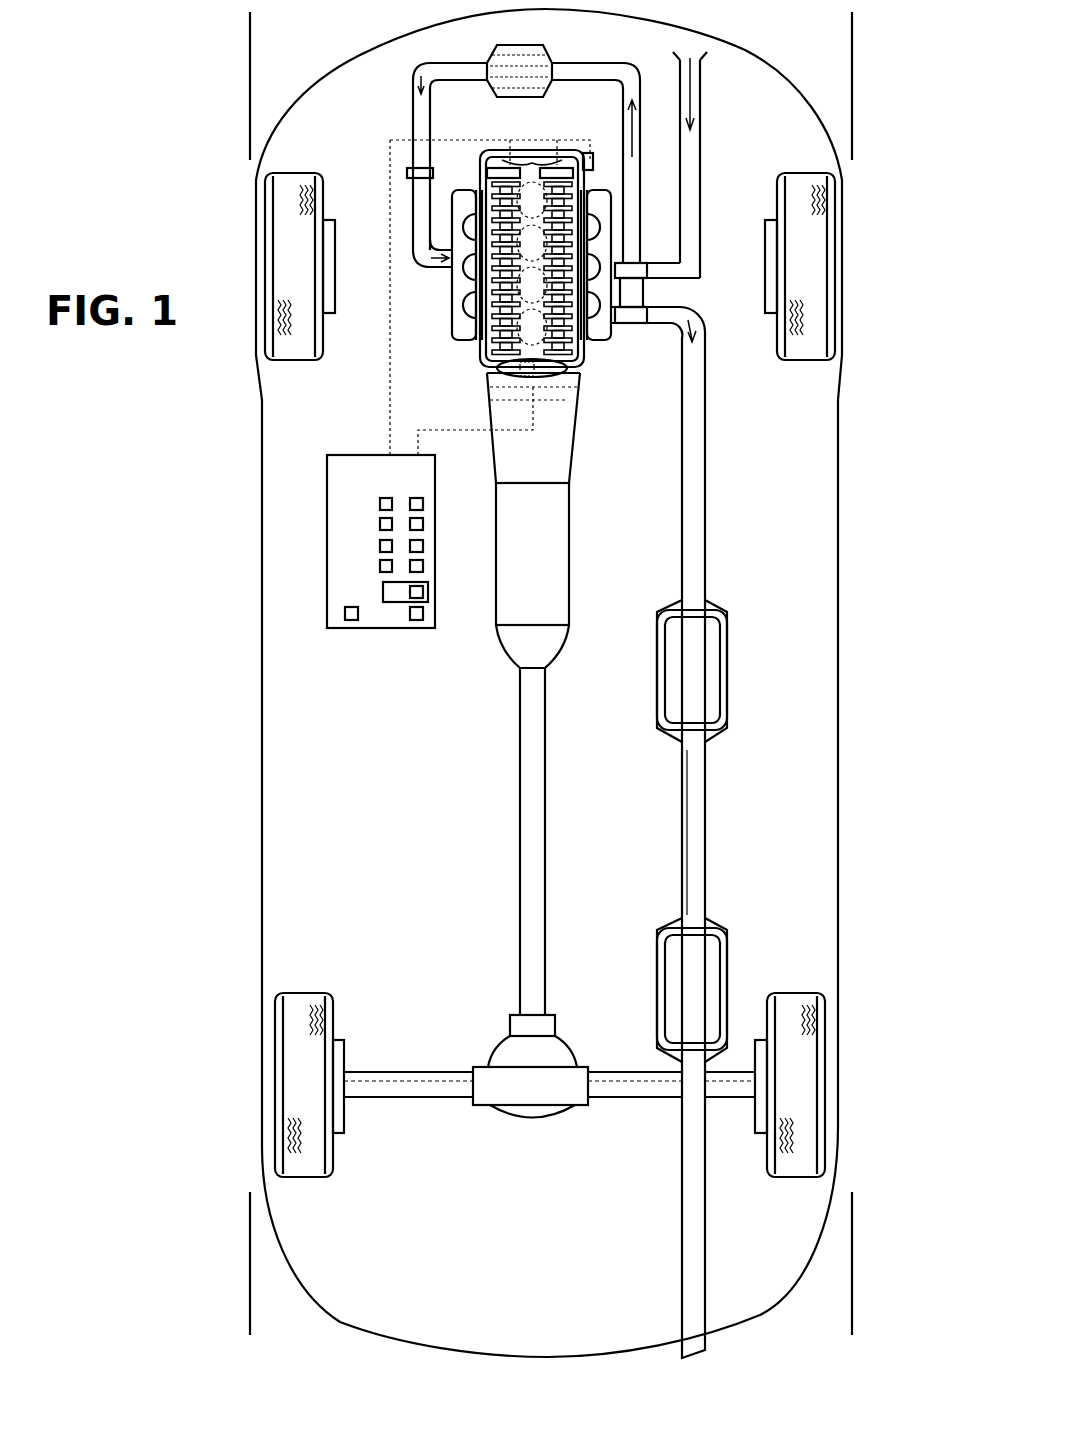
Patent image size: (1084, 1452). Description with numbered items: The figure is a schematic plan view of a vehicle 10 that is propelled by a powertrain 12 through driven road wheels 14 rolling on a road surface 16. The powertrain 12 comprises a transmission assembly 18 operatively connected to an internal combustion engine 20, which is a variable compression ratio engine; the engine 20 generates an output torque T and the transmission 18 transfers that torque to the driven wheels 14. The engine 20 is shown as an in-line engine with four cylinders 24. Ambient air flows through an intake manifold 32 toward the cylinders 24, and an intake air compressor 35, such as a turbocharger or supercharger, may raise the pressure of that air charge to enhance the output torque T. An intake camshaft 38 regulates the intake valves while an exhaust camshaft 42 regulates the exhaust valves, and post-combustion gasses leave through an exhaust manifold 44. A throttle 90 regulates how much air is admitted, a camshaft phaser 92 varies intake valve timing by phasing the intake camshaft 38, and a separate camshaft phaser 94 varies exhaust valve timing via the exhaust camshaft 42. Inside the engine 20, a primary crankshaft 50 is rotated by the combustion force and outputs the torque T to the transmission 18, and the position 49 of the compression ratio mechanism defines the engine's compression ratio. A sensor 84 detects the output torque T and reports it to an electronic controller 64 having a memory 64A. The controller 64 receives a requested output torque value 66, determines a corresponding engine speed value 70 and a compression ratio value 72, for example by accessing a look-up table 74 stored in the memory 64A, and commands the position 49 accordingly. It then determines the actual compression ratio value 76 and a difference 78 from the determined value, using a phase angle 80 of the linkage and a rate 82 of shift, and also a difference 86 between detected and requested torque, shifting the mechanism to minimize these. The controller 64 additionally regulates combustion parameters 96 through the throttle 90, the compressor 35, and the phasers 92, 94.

The vehicle 10 is at (258, 578).
The powertrain 12 is at (462, 648).
The road wheels 14 is at (313, 1080).
The road surface 16 is at (551, 673).
The transmission assembly 18 is at (533, 520).
The internal combustion engine 20 is at (468, 371).
The cylinders 24 is at (532, 268).
The intake manifold 32 is at (463, 330).
The intake air compressor 35 is at (648, 294).
The intake camshaft 38 is at (493, 180).
The exhaust camshaft 42 is at (578, 173).
The exhaust manifold 44 is at (609, 331).
The position of the mechanism 49 is at (423, 504).
The primary crankshaft 50 is at (494, 398).
The electronic controller 64 is at (381, 541).
The memory 64A is at (392, 603).
The requested output torque value 66 is at (423, 524).
The engine speed value 70 is at (423, 546).
The compression ratio value 72 is at (423, 566).
The look-up table 74 is at (423, 592).
The actual compression ratio value 76 is at (423, 613).
The compression ratio difference 78 is at (380, 504).
The phase angle 80 is at (380, 524).
The rate of shift 82 is at (380, 546).
The sensor 84 is at (532, 374).
The torque difference 86 is at (380, 566).
The throttle 90 is at (408, 173).
The camshaft phaser 92 is at (501, 165).
The camshaft phaser 94 is at (542, 165).
The combustion parameters 96 is at (345, 613).
The output torque T is at (548, 373).